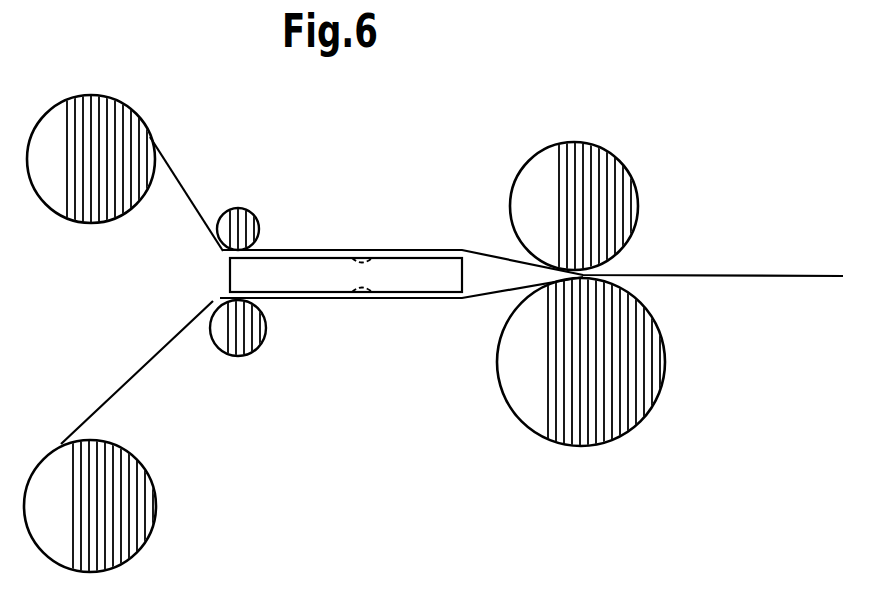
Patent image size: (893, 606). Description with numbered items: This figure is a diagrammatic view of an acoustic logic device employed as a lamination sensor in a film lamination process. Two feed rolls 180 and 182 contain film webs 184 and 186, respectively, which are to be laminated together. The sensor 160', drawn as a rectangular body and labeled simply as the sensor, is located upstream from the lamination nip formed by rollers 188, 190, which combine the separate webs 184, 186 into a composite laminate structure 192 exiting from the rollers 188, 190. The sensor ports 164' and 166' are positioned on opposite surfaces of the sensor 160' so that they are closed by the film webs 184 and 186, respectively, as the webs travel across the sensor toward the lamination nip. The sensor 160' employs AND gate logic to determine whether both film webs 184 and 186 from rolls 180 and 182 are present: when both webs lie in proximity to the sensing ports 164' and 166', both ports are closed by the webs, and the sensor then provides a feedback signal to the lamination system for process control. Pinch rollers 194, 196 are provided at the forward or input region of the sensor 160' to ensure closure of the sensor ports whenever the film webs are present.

The feed roll 180 is at (85, 93).
The feed roll 182 is at (155, 508).
The film web 184 is at (165, 158).
The film web 186 is at (118, 388).
The roller 188 is at (543, 152).
The roller 190 is at (540, 438).
The composite laminate structure 192 is at (720, 278).
The pinch roller 194 is at (245, 213).
The pinch roller 196 is at (235, 356).
The sensor 160' is at (346, 321).
The sensor port 164' is at (387, 229).
The sensor port 166' is at (336, 323).
The element sensor is at (237, 284).